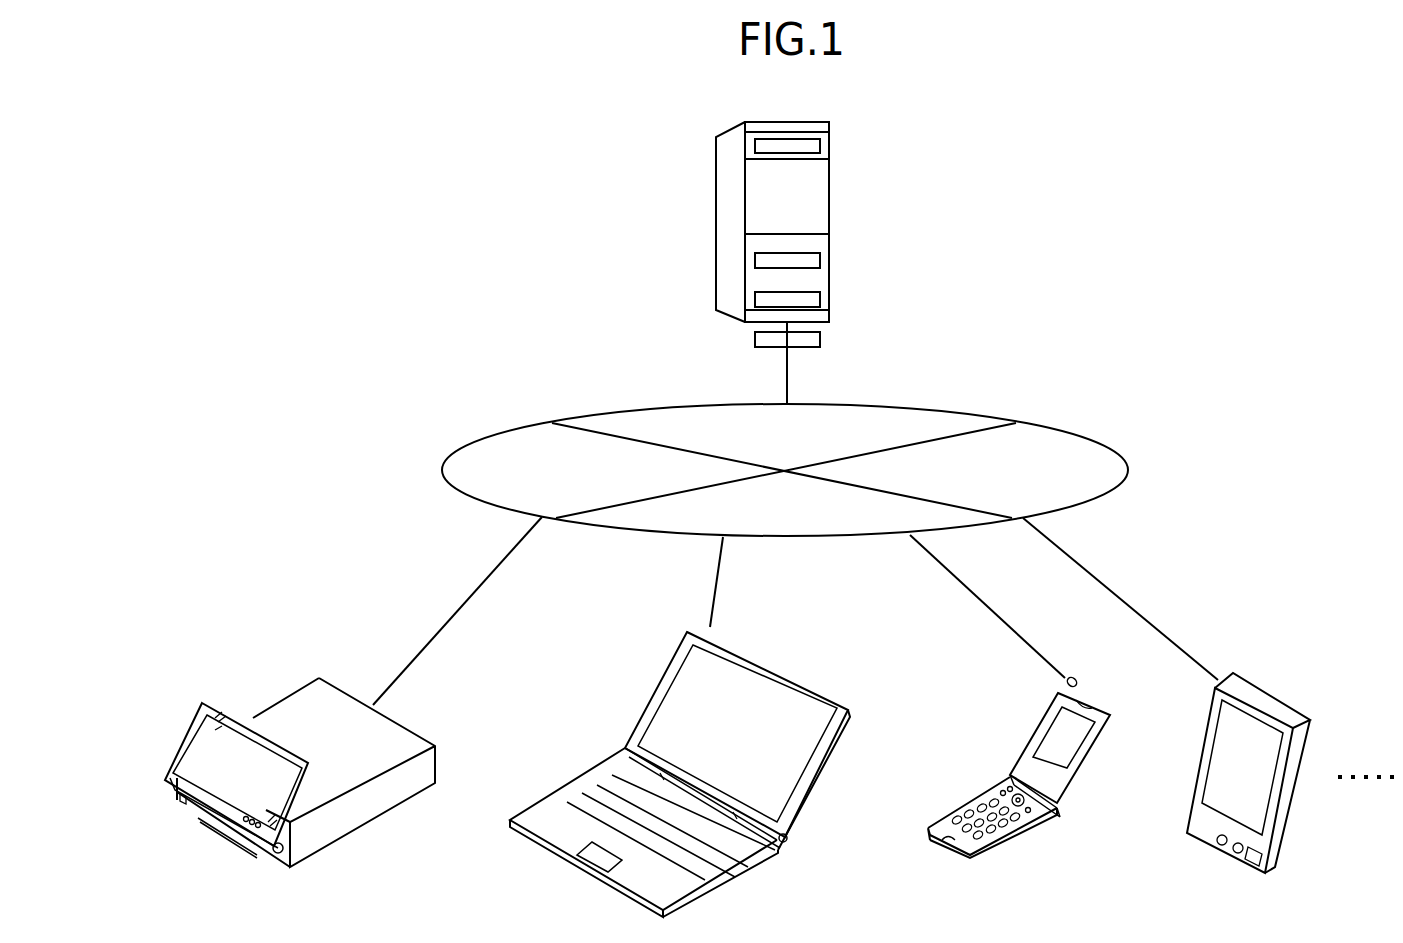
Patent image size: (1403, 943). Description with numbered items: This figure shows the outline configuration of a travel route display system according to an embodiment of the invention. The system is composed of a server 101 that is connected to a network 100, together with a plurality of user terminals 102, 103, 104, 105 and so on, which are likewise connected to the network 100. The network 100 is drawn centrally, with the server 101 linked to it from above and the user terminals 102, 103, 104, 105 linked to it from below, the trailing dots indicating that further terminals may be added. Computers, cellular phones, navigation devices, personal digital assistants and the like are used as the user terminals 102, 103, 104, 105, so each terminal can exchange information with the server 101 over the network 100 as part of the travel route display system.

The network 100 is at (1043, 425).
The server 101 is at (828, 122).
The user terminal 102 is at (328, 683).
The user terminal 103 is at (772, 670).
The user terminal 104 is at (1095, 702).
The user terminal 105 is at (1272, 693).